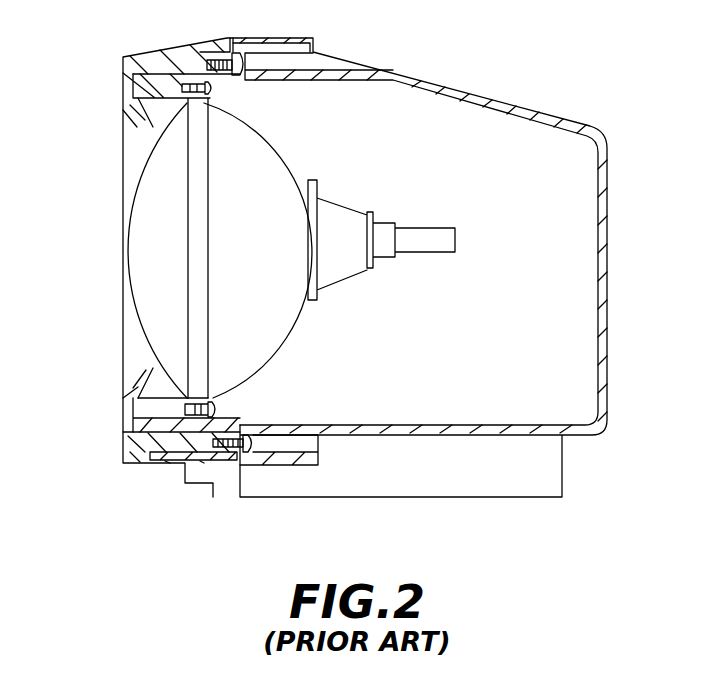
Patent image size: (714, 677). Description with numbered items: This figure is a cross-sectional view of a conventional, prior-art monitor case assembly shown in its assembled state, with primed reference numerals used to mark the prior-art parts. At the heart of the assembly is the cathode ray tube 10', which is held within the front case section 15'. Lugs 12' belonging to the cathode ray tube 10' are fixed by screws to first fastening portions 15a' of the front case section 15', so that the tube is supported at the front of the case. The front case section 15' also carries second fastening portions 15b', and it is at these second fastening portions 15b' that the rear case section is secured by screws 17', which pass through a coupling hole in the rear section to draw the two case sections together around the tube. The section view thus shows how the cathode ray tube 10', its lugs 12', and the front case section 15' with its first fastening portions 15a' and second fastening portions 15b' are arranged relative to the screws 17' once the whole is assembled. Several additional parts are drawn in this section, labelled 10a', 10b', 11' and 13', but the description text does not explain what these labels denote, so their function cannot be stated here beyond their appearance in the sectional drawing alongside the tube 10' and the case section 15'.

The cathode ray tube 10' is at (223, 256).
The lens front surface 10a' is at (113, 250).
The lens rear surface 10b' is at (266, 256).
The lens holder 11' is at (145, 235).
The lug 12' is at (239, 85).
The light source 13' is at (381, 225).
The front case section 15' is at (341, 276).
The first fastening portion 15a' is at (140, 400).
The second fastening portion 15b' is at (188, 490).
The screw 17' is at (260, 485).